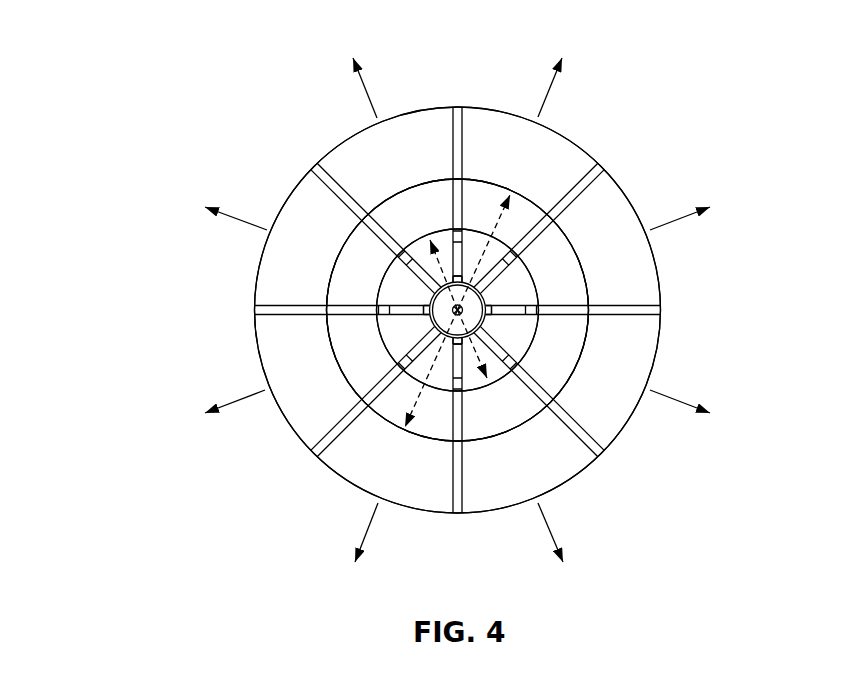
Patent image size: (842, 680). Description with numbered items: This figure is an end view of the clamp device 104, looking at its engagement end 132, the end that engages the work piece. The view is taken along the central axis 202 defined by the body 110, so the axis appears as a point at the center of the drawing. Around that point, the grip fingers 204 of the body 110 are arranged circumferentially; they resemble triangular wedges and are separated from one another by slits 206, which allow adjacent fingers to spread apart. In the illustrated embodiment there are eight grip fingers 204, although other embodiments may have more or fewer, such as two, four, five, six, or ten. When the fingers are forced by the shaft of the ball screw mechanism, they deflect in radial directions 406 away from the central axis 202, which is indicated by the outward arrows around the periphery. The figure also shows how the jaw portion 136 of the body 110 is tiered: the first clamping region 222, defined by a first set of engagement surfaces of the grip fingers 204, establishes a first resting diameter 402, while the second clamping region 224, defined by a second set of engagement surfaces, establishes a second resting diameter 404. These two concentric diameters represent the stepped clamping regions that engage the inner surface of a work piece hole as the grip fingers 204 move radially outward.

The clamp device 104 is at (77, 137).
The body 110 is at (253, 343).
The engagement end 132 is at (527, 275).
The jaw portion 136 is at (330, 398).
The central axis 202 is at (455, 309).
The grip fingers 204 is at (390, 135).
The slit 206 is at (343, 183).
The first clamping region 222 is at (475, 427).
The second clamping region 224 is at (430, 425).
The first resting diameter 402 is at (435, 256).
The second resting diameter 404 is at (492, 200).
The radial directions 406 is at (682, 220).